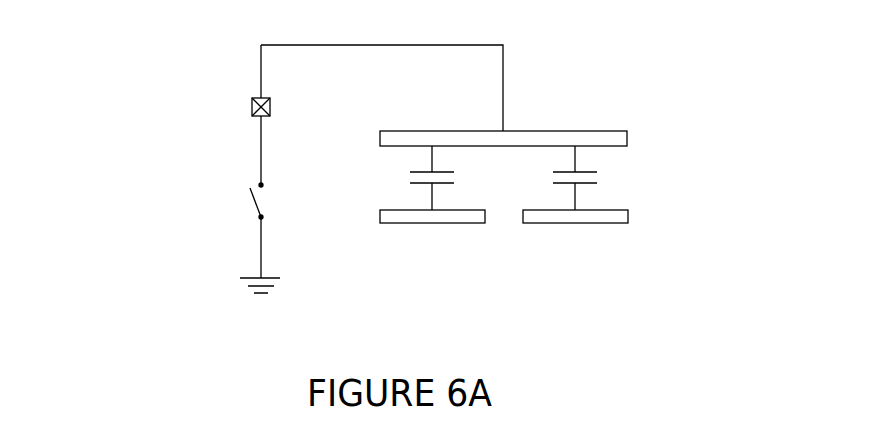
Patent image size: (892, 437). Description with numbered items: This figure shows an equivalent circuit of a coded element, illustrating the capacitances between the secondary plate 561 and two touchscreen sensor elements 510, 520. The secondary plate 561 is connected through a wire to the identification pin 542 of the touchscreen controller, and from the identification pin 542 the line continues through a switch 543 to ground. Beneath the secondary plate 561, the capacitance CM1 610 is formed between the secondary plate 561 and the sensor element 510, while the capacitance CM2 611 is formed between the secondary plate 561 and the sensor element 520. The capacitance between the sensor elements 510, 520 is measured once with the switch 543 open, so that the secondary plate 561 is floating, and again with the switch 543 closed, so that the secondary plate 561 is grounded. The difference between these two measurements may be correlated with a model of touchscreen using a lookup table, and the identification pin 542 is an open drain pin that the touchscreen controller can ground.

The identification pin 542 is at (251, 97).
The switch 543 is at (224, 192).
The secondary plate 561 is at (627, 131).
The capacitance CM1 610 is at (408, 178).
The capacitance CM2 611 is at (598, 178).
The sensor element 510 is at (432, 237).
The sensor element 520 is at (575, 237).